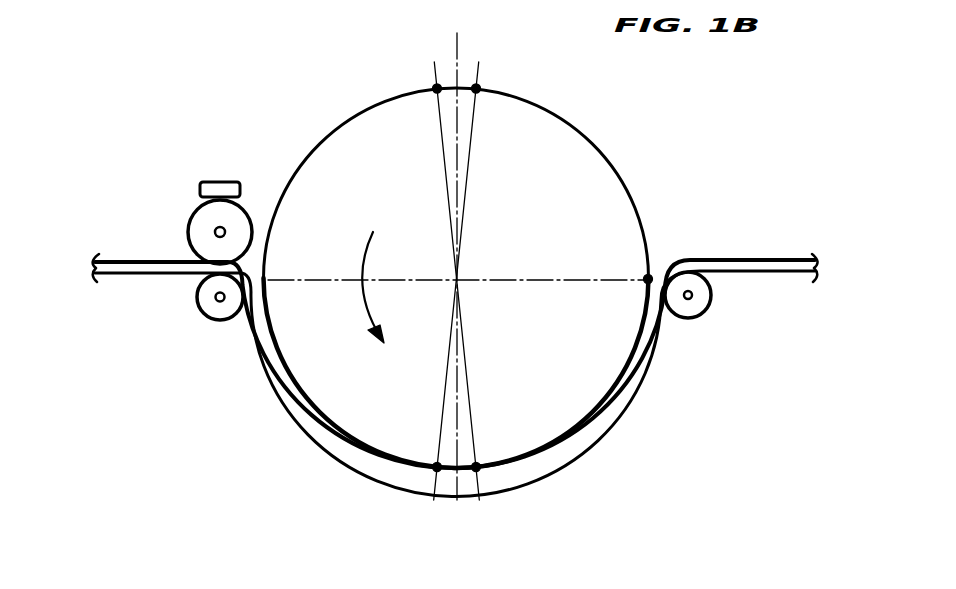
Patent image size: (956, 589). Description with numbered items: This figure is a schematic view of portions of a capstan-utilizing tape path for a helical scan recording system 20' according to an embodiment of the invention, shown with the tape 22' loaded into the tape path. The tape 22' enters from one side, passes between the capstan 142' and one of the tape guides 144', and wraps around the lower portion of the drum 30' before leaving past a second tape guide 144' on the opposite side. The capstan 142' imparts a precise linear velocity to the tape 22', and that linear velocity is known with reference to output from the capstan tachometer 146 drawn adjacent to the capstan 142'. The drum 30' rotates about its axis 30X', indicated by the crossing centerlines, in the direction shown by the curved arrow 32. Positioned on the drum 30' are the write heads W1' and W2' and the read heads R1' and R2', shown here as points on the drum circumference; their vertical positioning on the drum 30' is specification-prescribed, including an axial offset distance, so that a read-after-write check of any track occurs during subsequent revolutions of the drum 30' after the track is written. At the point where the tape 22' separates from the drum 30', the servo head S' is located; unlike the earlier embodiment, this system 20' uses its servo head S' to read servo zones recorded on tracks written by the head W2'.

The helical scan recording system tape path 20' is at (195, 177).
The tape 22' is at (455, 375).
The drum 30' is at (456, 278).
The drum axis 30X' is at (458, 266).
The direction of rotation arrow 32 is at (366, 253).
The capstan 142' is at (186, 223).
The tape guides 144' is at (445, 318).
The roller support block 146 is at (227, 181).
The read head R1' is at (422, 78).
The read head R2' is at (495, 78).
The write head W1' is at (492, 452).
The write head W2' is at (421, 452).
The servo head S' is at (667, 253).